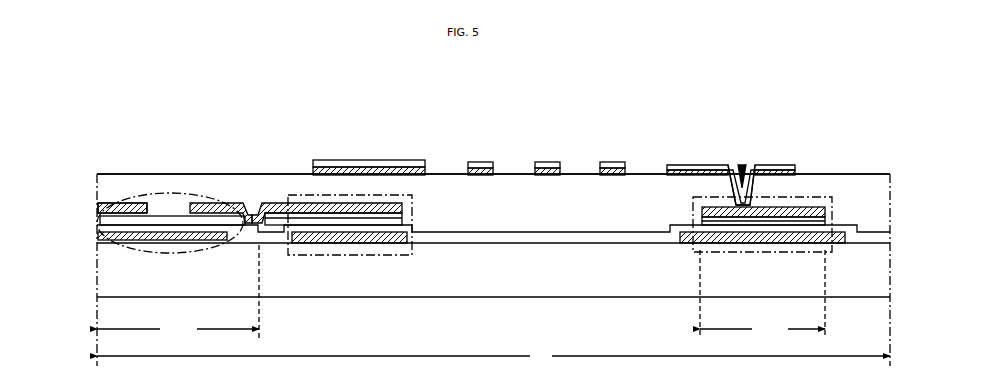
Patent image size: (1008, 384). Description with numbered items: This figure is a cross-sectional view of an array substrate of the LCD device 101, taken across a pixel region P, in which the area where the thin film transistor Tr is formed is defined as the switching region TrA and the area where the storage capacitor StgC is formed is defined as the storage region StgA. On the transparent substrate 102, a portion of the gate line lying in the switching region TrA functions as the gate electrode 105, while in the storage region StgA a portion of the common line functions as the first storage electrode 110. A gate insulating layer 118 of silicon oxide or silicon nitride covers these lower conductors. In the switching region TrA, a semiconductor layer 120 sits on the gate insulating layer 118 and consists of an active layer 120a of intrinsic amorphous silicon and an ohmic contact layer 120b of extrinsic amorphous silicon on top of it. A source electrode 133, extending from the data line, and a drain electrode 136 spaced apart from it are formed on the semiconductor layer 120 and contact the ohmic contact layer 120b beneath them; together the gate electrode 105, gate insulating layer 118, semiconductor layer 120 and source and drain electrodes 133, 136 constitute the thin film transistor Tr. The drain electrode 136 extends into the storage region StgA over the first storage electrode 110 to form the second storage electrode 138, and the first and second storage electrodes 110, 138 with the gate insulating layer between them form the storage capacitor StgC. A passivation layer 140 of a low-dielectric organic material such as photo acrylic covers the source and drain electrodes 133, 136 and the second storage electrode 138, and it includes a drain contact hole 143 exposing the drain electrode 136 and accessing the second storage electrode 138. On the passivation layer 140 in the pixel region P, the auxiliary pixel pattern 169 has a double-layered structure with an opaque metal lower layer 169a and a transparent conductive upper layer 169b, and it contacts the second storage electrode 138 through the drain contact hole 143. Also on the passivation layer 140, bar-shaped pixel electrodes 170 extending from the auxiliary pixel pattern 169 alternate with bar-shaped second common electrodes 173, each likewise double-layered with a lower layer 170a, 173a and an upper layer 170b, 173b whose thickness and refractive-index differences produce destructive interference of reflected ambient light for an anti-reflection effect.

The LCD device 101 is at (840, 99).
The transparent substrate 102 is at (853, 296).
The gate electrode 105 is at (177, 242).
The first storage electrode 110 is at (352, 243).
The gate insulating layer 118 is at (509, 234).
The semiconductor layer 120 is at (138, 213).
The active layer 120a is at (98, 207).
The ohmic contact layer 120b is at (101, 220).
The source electrode 133 is at (122, 203).
The drain electrode 136 is at (225, 203).
The second storage electrode 138 is at (357, 204).
The passivation layer 140 is at (553, 228).
The drain contact hole 143 is at (742, 163).
The auxiliary pixel pattern 169 is at (554, 151).
The lower layer of auxiliary pixel pattern 169a is at (357, 166).
The upper layer of auxiliary pixel pattern 169b is at (334, 166).
The pixel electrode 170 is at (555, 136).
The lower layer of pixel electrode 170a is at (553, 166).
The upper layer of pixel electrode 170b is at (542, 166).
The second common electrode 173 is at (557, 136).
The lower layer of second common electrode 173a is at (486, 166).
The upper layer of second common electrode 173b is at (475, 166).
The thin film transistor Tr is at (140, 258).
The switching region TrA is at (178, 291).
The storage capacitor StgC is at (308, 256).
The storage region StgA is at (762, 294).
The pixel region P is at (493, 356).